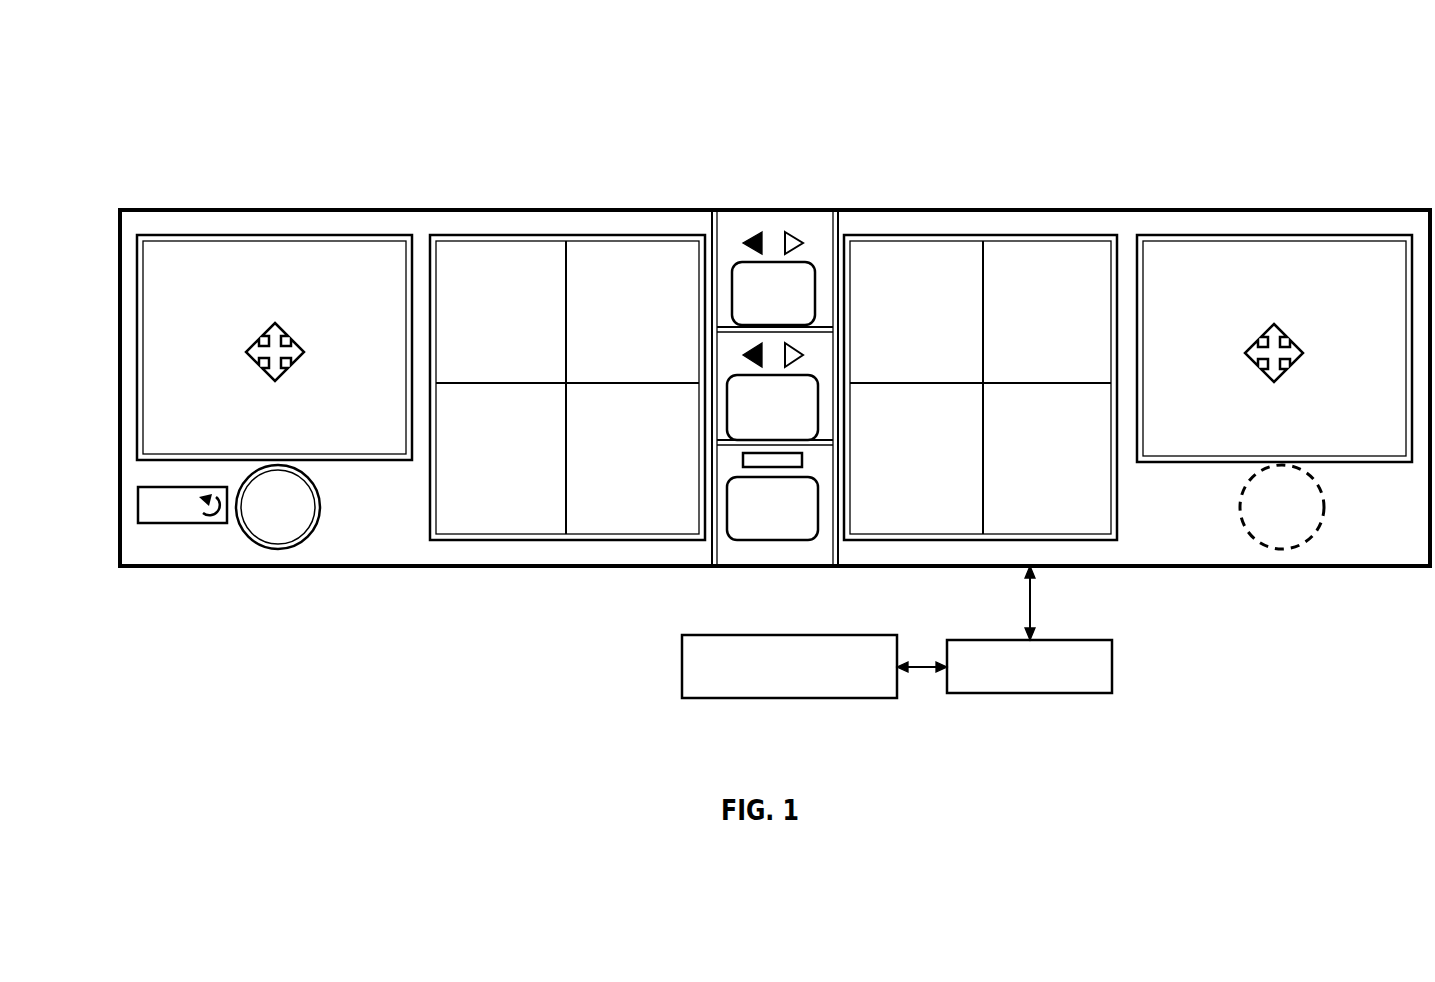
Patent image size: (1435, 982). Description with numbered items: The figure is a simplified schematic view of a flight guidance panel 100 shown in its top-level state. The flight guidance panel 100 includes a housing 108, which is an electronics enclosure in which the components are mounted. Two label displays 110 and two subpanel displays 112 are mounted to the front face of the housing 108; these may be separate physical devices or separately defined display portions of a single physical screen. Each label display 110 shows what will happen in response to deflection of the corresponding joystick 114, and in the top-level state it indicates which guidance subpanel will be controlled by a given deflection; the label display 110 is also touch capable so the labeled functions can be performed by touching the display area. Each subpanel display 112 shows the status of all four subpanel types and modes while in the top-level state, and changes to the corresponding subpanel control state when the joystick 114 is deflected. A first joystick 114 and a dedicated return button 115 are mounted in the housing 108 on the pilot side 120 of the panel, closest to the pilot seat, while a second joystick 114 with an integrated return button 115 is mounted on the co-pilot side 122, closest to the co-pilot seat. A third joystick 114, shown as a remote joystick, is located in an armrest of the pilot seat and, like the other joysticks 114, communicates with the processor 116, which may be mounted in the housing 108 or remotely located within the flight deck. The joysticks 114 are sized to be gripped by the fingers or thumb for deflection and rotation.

The flight guidance panel 100 is at (1096, 79).
The housing 108 is at (217, 210).
The label display 110 is at (357, 235).
The subpanel display 112 is at (540, 235).
The joystick 114 is at (275, 549).
The return button 115 is at (182, 523).
The processor 116 is at (1030, 695).
The pilot side 120 is at (392, 581).
The co-pilot side 122 is at (1207, 581).